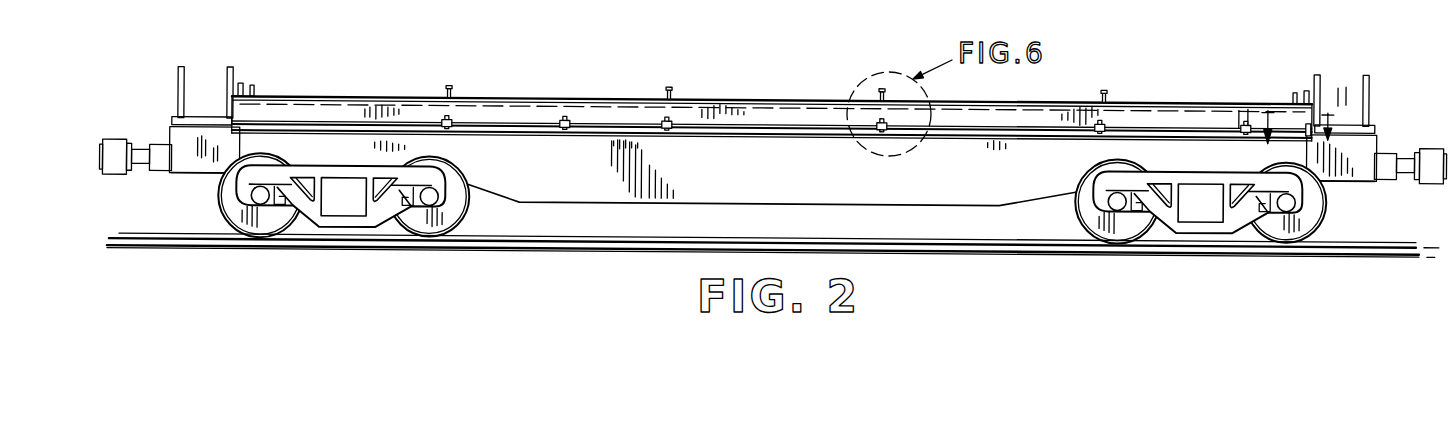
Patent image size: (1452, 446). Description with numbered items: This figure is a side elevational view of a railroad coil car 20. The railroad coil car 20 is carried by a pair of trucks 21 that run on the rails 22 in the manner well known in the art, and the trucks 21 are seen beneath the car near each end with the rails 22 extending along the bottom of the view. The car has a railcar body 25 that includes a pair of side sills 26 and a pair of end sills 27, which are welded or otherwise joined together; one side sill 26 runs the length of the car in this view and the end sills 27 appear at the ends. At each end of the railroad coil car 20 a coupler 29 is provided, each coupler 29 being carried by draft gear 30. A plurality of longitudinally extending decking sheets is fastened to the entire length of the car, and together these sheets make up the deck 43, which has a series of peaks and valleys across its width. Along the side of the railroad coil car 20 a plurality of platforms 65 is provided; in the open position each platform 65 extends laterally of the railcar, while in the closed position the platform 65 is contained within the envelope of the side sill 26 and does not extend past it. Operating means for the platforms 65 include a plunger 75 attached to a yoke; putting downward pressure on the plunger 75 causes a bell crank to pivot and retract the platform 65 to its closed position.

The railroad coil car 20 is at (548, 67).
The trucks 21 is at (323, 220).
The rails 22 is at (555, 243).
The railcar body 25 is at (757, 180).
The side sills 26 is at (1047, 100).
The end sills 27 is at (247, 82).
The couplers 29 is at (118, 150).
The draft gear 30 is at (160, 174).
The deck 43 is at (353, 92).
The platforms 65 is at (303, 128).
The plunger 75 is at (665, 85).